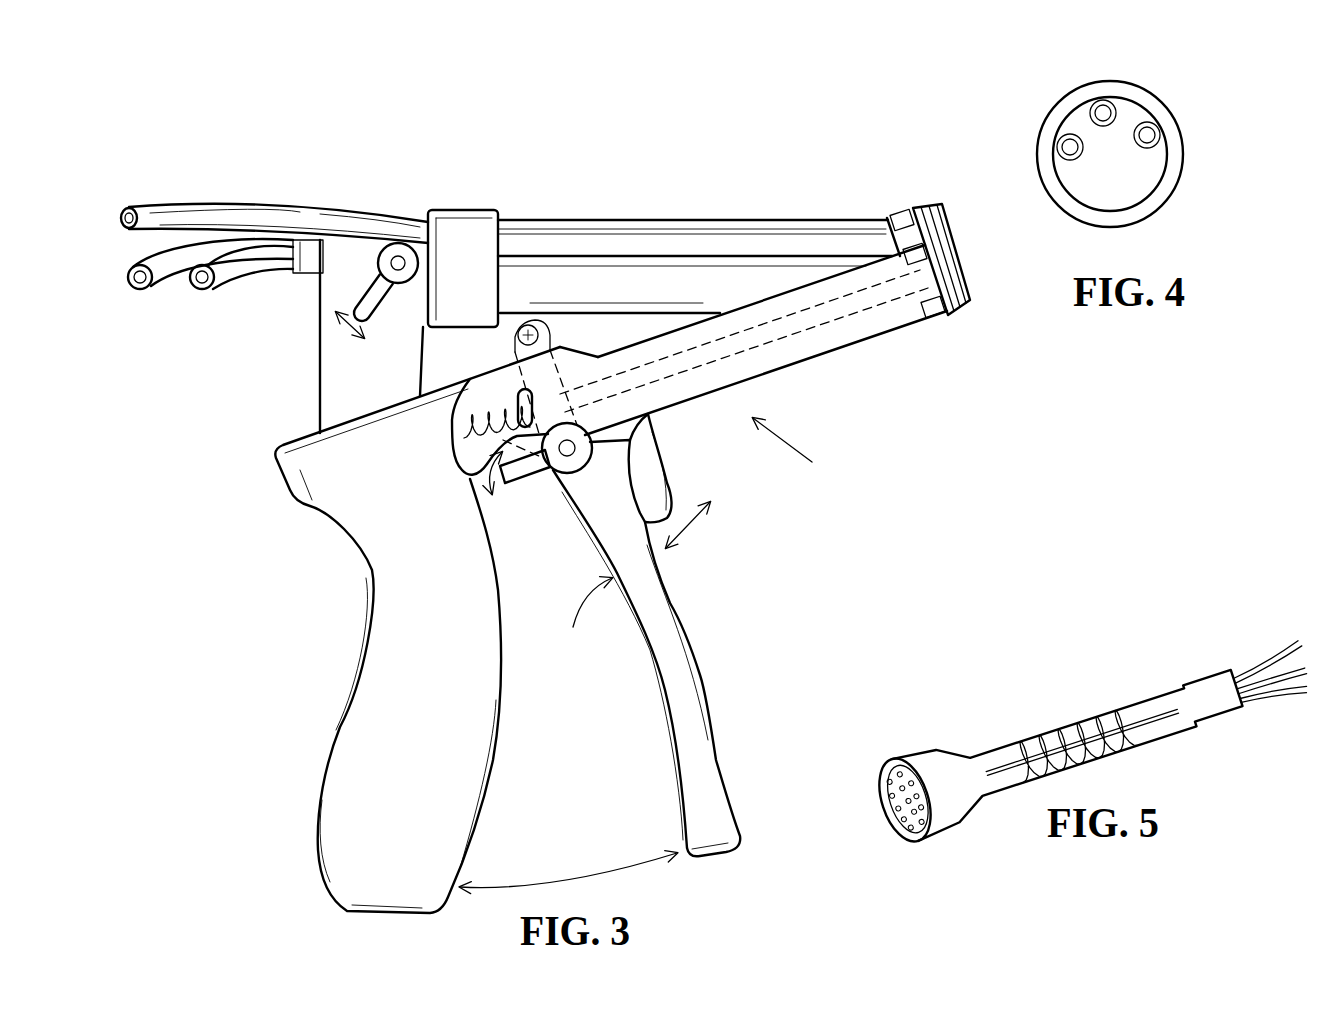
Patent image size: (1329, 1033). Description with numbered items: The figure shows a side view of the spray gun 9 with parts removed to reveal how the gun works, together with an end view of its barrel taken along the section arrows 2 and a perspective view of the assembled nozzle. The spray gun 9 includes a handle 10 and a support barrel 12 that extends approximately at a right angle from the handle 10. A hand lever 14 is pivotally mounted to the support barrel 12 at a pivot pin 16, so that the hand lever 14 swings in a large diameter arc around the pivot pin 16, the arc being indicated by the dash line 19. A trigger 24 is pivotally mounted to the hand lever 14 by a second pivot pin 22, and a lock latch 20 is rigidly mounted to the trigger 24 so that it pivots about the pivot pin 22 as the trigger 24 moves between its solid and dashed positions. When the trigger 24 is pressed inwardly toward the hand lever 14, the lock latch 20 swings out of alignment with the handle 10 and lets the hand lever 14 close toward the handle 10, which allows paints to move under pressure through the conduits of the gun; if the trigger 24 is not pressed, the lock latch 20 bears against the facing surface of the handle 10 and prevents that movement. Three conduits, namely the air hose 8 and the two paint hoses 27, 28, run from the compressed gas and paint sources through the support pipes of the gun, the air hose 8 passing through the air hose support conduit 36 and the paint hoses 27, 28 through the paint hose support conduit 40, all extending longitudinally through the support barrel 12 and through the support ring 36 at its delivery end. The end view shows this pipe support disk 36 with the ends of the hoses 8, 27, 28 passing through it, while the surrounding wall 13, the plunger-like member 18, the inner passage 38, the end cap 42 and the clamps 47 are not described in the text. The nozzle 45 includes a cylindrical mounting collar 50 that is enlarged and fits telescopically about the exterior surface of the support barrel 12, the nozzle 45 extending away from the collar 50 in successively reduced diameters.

In FIG. 3, the section arrows 2 is at (907, 177).
In FIG. 3, the air hose 8 is at (222, 215).
In FIG. 4, the air hose 8 is at (1103, 100).
In FIG. 3, the spray gun 9 is at (789, 454).
In FIG. 5, the spray gun 9 is at (1240, 662).
In FIG. 3, the handle 10 is at (404, 677).
In FIG. 3, the support barrel 12 is at (767, 228).
In FIG. 4, the inner barrel wall 13 is at (1150, 110).
In FIG. 3, the hand lever 14 is at (646, 648).
In FIG. 3, the pivot pin 16 is at (515, 334).
In FIG. 3, the plunger 18 is at (550, 370).
In FIG. 3, the dash line 19 is at (572, 882).
In FIG. 3, the lock latch 20 is at (545, 470).
In FIG. 3, the pivot pin 22 is at (576, 456).
In FIG. 3, the trigger 24 is at (658, 492).
In FIG. 3, the paint hose 27 is at (171, 250).
In FIG. 4, the paint hose 27 is at (1060, 136).
In FIG. 3, the paint hose 28 is at (262, 268).
In FIG. 4, the paint hose 28 is at (1160, 134).
In FIG. 3, the air hose support conduit 36 is at (692, 228).
In FIG. 4, the air hose support conduit 36 is at (1116, 200).
In FIG. 3, the fluid barrel 38 is at (696, 393).
In FIG. 3, the paint hose support conduit 40 is at (640, 300).
In FIG. 3, the end cap 42 is at (936, 326).
In FIG. 5, the nozzle 45 is at (1090, 700).
In FIG. 3, the clamp 47 is at (895, 216).
In FIG. 5, the cylindrical mounting collar 50 is at (914, 758).